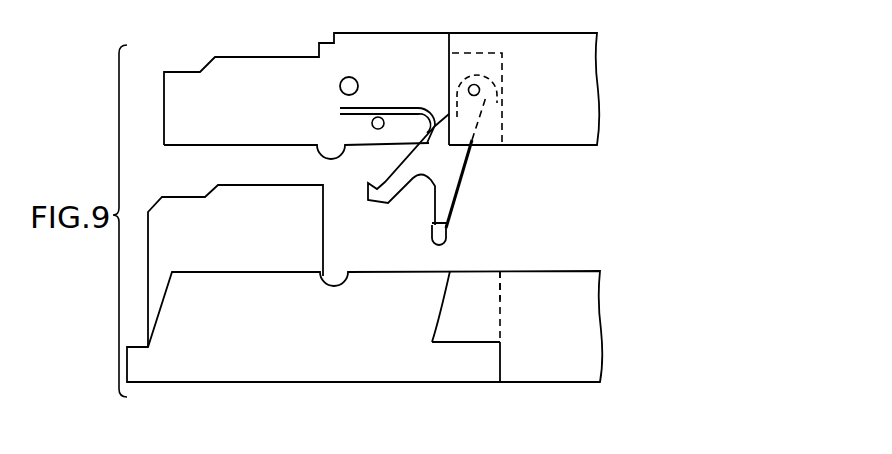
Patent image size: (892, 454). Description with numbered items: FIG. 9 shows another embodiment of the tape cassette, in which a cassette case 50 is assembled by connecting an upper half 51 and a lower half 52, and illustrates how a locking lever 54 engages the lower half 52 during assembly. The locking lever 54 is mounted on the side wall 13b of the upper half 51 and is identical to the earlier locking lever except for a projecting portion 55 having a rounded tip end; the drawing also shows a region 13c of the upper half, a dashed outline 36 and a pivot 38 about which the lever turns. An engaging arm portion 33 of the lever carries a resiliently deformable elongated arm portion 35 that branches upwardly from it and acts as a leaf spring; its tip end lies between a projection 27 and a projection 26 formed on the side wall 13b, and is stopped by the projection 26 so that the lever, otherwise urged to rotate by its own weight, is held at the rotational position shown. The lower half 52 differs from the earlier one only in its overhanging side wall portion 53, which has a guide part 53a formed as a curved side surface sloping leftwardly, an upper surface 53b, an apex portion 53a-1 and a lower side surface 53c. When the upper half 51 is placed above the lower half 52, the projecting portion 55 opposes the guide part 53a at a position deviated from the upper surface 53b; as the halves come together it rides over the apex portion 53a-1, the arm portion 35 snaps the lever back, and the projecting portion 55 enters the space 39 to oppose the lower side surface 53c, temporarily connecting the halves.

The side wall 13b is at (266, 62).
The recess portion of plate 13c is at (473, 58).
The cassette case 50 is at (558, 22).
The upper half 51 is at (600, 70).
The projection 27 is at (352, 77).
The elongated arm portion 35 is at (401, 107).
The projection 26 is at (372, 122).
The guide groove 36 is at (500, 73).
The pivot pin 38 is at (480, 92).
The engaging arm portion 33 is at (403, 168).
The locking lever 54 is at (467, 168).
The projecting portion 55 is at (432, 234).
The lower half 52 is at (601, 300).
The overhanging side wall portion 53 is at (482, 280).
The upper surface 53b is at (462, 269).
The guide part 53a is at (443, 302).
The apex portion 53a-1 is at (432, 338).
The lower side surface 53c is at (467, 345).
The space 39 is at (480, 368).